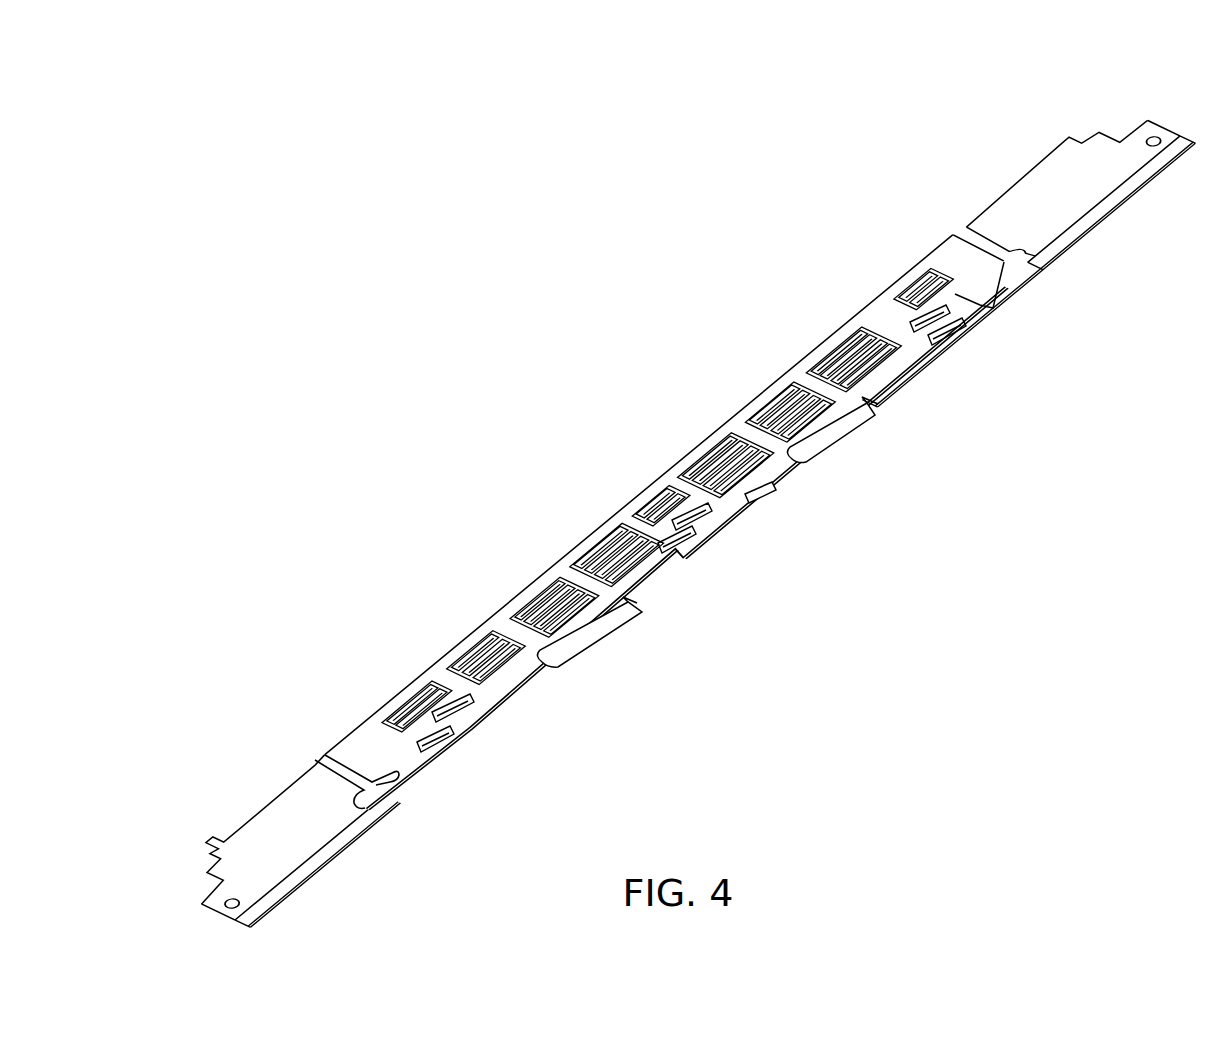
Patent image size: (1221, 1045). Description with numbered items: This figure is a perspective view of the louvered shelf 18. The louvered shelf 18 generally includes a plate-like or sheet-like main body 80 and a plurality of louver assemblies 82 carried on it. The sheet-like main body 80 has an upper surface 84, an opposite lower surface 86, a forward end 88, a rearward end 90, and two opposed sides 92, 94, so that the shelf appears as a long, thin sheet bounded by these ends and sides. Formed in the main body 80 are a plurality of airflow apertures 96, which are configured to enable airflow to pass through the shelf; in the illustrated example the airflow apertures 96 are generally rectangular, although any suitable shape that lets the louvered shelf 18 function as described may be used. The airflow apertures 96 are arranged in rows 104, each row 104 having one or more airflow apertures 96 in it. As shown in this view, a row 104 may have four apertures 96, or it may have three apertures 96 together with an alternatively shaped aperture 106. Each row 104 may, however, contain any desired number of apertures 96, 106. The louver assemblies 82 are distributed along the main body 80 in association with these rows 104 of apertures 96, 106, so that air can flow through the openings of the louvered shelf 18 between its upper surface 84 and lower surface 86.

The louvered shelf 18 is at (420, 196).
The main body 80 is at (262, 838).
The louver assemblies 82 is at (410, 700).
The upper surface 84 is at (376, 834).
The lower surface 86 is at (305, 778).
The forward end 88 is at (680, 597).
The rearward end 90 is at (664, 446).
The side 92 is at (1124, 110).
The side 94 is at (200, 916).
The airflow apertures 96 is at (450, 722).
The rows 104 is at (886, 274).
The alternatively shaped aperture 106 is at (455, 722).